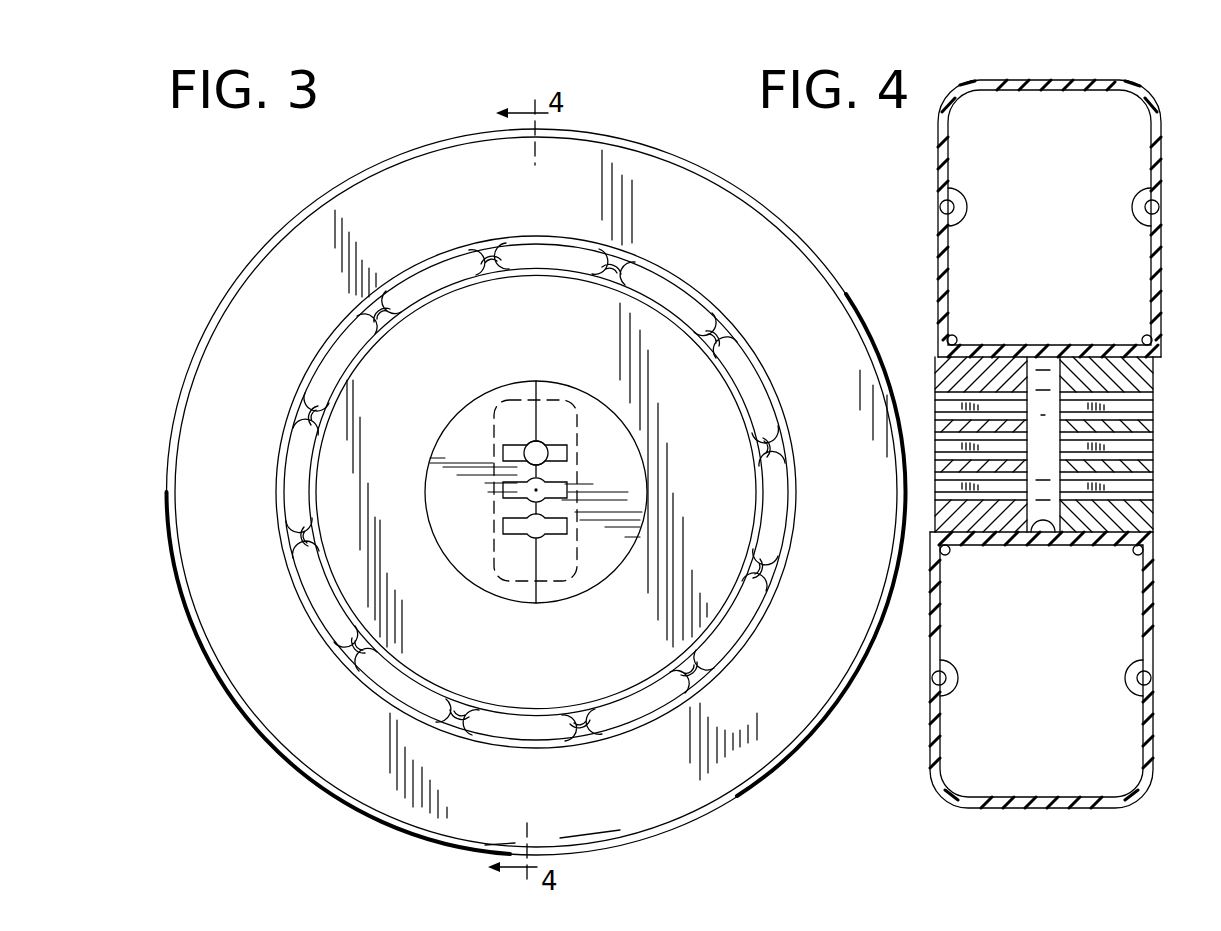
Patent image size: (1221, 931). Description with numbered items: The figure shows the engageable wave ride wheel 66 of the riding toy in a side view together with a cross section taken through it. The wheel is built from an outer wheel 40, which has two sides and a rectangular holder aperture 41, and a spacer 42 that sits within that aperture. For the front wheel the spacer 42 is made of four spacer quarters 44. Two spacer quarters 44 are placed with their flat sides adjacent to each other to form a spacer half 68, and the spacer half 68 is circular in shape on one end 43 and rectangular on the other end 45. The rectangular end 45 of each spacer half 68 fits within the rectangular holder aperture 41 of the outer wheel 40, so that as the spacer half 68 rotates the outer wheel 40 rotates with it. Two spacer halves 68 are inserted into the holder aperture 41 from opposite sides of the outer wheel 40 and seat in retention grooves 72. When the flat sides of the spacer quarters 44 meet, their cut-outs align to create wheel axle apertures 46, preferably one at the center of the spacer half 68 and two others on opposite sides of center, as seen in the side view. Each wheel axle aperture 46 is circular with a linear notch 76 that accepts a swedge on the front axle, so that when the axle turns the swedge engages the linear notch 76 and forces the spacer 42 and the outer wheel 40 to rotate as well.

In FIG. 4, the outer wheel 40 is at (1163, 232).
In FIG. 4, the holder aperture 41 is at (932, 462).
In FIG. 3, the spacer 42 is at (474, 402).
In FIG. 4, the spacer 42 is at (933, 512).
In FIG. 4, the circular end 43 is at (1155, 398).
In FIG. 3, the spacer quarter 44 is at (577, 603).
In FIG. 4, the spacer quarter 44 is at (942, 368).
In FIG. 4, the rectangular end 45 is at (1043, 528).
In FIG. 3, the wheel axle aperture 46 is at (541, 448).
In FIG. 4, the wheel axle aperture 46 is at (1155, 428).
In FIG. 3, the engageable wave ride wheel 66 is at (357, 815).
In FIG. 4, the engageable wave ride wheel 66 is at (962, 815).
In FIG. 4, the spacer half 68 is at (940, 392).
In FIG. 4, the retention groove 72 is at (940, 347).
In FIG. 3, the linear notch 76 is at (512, 444).